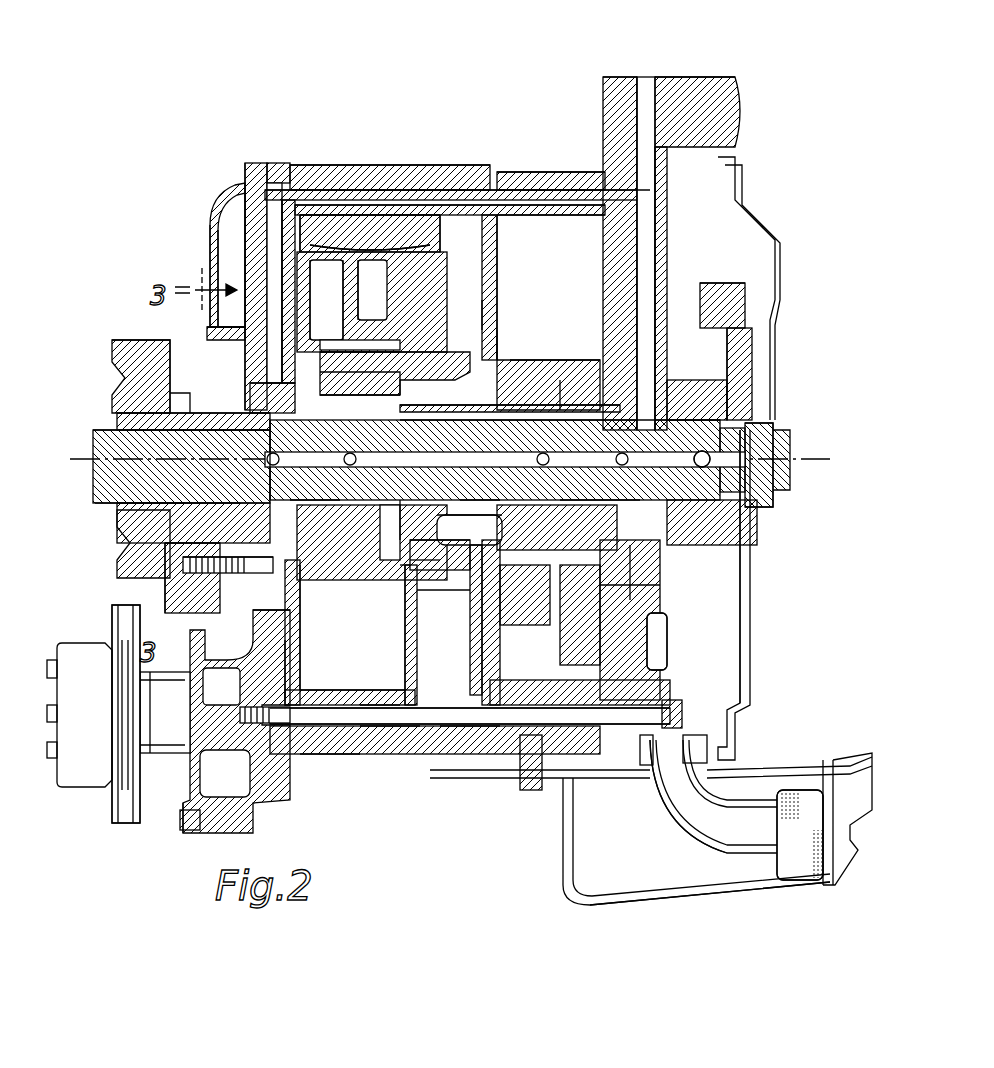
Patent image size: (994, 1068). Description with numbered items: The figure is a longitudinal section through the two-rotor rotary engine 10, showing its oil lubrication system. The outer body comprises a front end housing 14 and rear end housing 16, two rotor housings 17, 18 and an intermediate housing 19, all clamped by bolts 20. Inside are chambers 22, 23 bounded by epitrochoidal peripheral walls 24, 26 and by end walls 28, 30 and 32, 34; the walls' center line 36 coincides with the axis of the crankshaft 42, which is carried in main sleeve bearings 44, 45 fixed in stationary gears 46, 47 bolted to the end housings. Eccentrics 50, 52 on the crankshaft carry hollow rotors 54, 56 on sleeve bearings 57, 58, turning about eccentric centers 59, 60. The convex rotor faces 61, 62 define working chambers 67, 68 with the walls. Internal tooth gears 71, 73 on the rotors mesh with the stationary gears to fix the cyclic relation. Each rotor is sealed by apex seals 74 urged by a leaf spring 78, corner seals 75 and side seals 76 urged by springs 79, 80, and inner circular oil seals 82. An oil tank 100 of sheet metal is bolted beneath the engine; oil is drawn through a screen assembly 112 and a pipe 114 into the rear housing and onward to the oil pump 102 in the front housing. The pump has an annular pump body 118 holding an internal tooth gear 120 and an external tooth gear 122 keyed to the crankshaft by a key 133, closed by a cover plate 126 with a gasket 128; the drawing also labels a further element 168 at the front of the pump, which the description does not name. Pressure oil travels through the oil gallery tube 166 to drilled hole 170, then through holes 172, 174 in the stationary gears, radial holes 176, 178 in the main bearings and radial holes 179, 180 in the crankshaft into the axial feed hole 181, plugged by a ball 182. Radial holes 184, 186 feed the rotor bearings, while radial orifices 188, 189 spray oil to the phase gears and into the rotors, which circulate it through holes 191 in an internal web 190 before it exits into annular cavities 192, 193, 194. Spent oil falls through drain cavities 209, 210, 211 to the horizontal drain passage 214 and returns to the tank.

The rotary engine 10 is at (455, 170).
The front end housing 14 is at (250, 205).
The rear end housing 16 is at (618, 77).
The rotor housing 17 is at (337, 170).
The rotor housing 18 is at (530, 178).
The intermediate housing 19 is at (470, 170).
The bolts 20 is at (440, 740).
The chamber 22 is at (330, 745).
The chamber 23 is at (555, 232).
The peripheral wall 24 is at (292, 752).
The peripheral wall 26 is at (510, 215).
The end wall 28 is at (292, 645).
The end wall 30 is at (390, 615).
The end wall 32 is at (495, 312).
The end wall 34 is at (593, 273).
The center line 36 is at (785, 455).
The crankshaft 42 is at (735, 420).
The main sleeve bearing 44 is at (265, 420).
The main sleeve bearing 45 is at (580, 488).
The stationary gear 46 is at (181, 453).
The stationary gear 47 is at (690, 565).
The eccentric 50 is at (370, 370).
The eccentric 52 is at (505, 550).
The rotor 54 is at (330, 560).
The rotor 56 is at (538, 360).
The sleeve bearing 57 is at (380, 360).
The sleeve bearing 58 is at (570, 375).
The eccentric center 59 is at (450, 410).
The eccentric center 60 is at (515, 520).
The rotor faces 61 is at (352, 654).
The rotor faces 62 is at (500, 355).
The working chambers 67 is at (372, 705).
The working chambers 68 is at (590, 250).
The internal tooth gear 71 is at (312, 333).
The internal tooth gear 73 is at (640, 585).
The apex seals 74 is at (353, 226).
The corner seals 75 is at (383, 250).
The side seals 76 is at (405, 560).
The leaf spring 78 is at (322, 226).
The springs 79 is at (392, 250).
The springs 80 is at (400, 570).
The oil seals 82 is at (420, 548).
The oil tank 100 is at (680, 905).
The oil pump 102 is at (185, 540).
The screen assembly 112 is at (800, 860).
The pipe 114 is at (672, 830).
The pump body 118 is at (210, 350).
The internal tooth gear 120 is at (205, 570).
The external tooth gear 122 is at (170, 400).
The cover plate 126 is at (193, 350).
The gasket 128 is at (243, 327).
The key 133 is at (170, 500).
The oil gallery tube 166 is at (615, 185).
The cover 168 is at (268, 222).
The drilled hole 170 is at (650, 105).
The hole 172 is at (290, 395).
The hole 174 is at (640, 375).
The radial hole 176 is at (272, 430).
The radial hole 178 is at (680, 431).
The radial hole 179 is at (240, 485).
The radial hole 180 is at (599, 430).
The axial feed hole 181 is at (450, 431).
The ball 182 is at (702, 468).
The radial hole 184 is at (345, 390).
The radial hole 186 is at (527, 429).
The radial orifice 188 is at (315, 484).
The radial orifice 189 is at (470, 483).
The internal web 190 is at (353, 320).
The holes 191 is at (350, 298).
The annular cavity 192 is at (186, 585).
The annular cavity 193 is at (448, 622).
The annular cavity 194 is at (615, 590).
The drain cavity 209 is at (270, 665).
The drain cavity 210 is at (375, 733).
The drain cavity 211 is at (640, 690).
The drain passage 214 is at (455, 745).